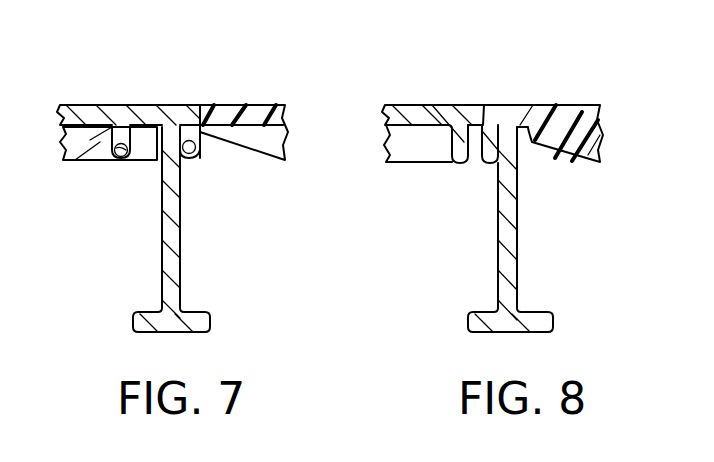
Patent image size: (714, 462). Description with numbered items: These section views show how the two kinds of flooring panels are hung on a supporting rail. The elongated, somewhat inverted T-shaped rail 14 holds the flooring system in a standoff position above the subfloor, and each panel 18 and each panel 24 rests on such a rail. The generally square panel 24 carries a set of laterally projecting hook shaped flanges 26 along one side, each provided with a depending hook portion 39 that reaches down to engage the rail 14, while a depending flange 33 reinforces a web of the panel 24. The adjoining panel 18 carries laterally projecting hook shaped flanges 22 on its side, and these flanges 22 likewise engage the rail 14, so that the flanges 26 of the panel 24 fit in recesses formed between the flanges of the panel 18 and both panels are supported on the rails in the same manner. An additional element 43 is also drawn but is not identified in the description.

In FIG. 7, the rails 14 is at (182, 258).
In FIG. 8, the rails 14 is at (498, 265).
In FIG. 7, the panels 18 is at (258, 105).
In FIG. 8, the panels 18 is at (550, 105).
In FIG. 8, the hook shaped flanges 22 is at (485, 106).
In FIG. 7, the panels 24 is at (84, 106).
In FIG. 8, the panels 24 is at (417, 105).
In FIG. 7, the hook shaped flanges 26 is at (198, 106).
In FIG. 7, the depending flange 33 is at (93, 162).
In FIG. 8, the depending flange 33 is at (456, 162).
In FIG. 7, the depending hook portion 39 is at (195, 163).
In FIG. 7, the ball 43 is at (150, 162).